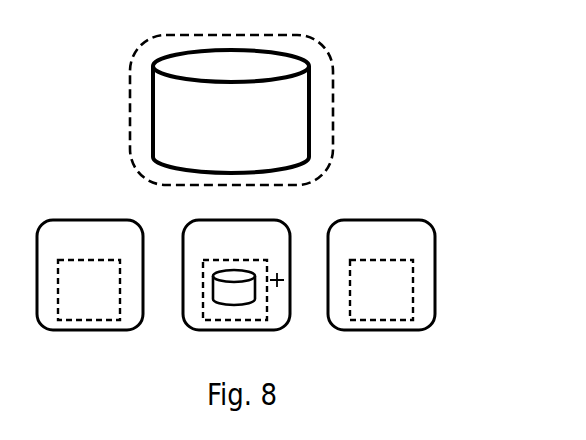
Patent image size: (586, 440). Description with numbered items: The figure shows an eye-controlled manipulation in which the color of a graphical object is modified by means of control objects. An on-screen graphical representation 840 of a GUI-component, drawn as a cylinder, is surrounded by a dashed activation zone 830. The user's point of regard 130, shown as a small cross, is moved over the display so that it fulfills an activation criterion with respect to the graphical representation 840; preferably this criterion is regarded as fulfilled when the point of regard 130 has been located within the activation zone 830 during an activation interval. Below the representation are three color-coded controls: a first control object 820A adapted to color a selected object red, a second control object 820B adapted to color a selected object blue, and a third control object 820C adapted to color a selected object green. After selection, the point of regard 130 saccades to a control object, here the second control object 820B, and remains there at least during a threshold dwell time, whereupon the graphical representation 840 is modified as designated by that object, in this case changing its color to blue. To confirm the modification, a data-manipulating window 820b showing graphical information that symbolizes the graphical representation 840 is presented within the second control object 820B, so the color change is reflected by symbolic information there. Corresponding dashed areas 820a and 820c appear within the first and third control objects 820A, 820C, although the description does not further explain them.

The activation zone 830 is at (292, 36).
The graphical representation 840 is at (312, 116).
The point of regard 130 is at (280, 273).
The first control object 820A is at (72, 220).
The red bin drop area 820a is at (93, 321).
The second control object 820B is at (218, 220).
The data-manipulating window 820b is at (238, 321).
The third control object 820C is at (362, 220).
The green bin drop area 820c is at (383, 321).